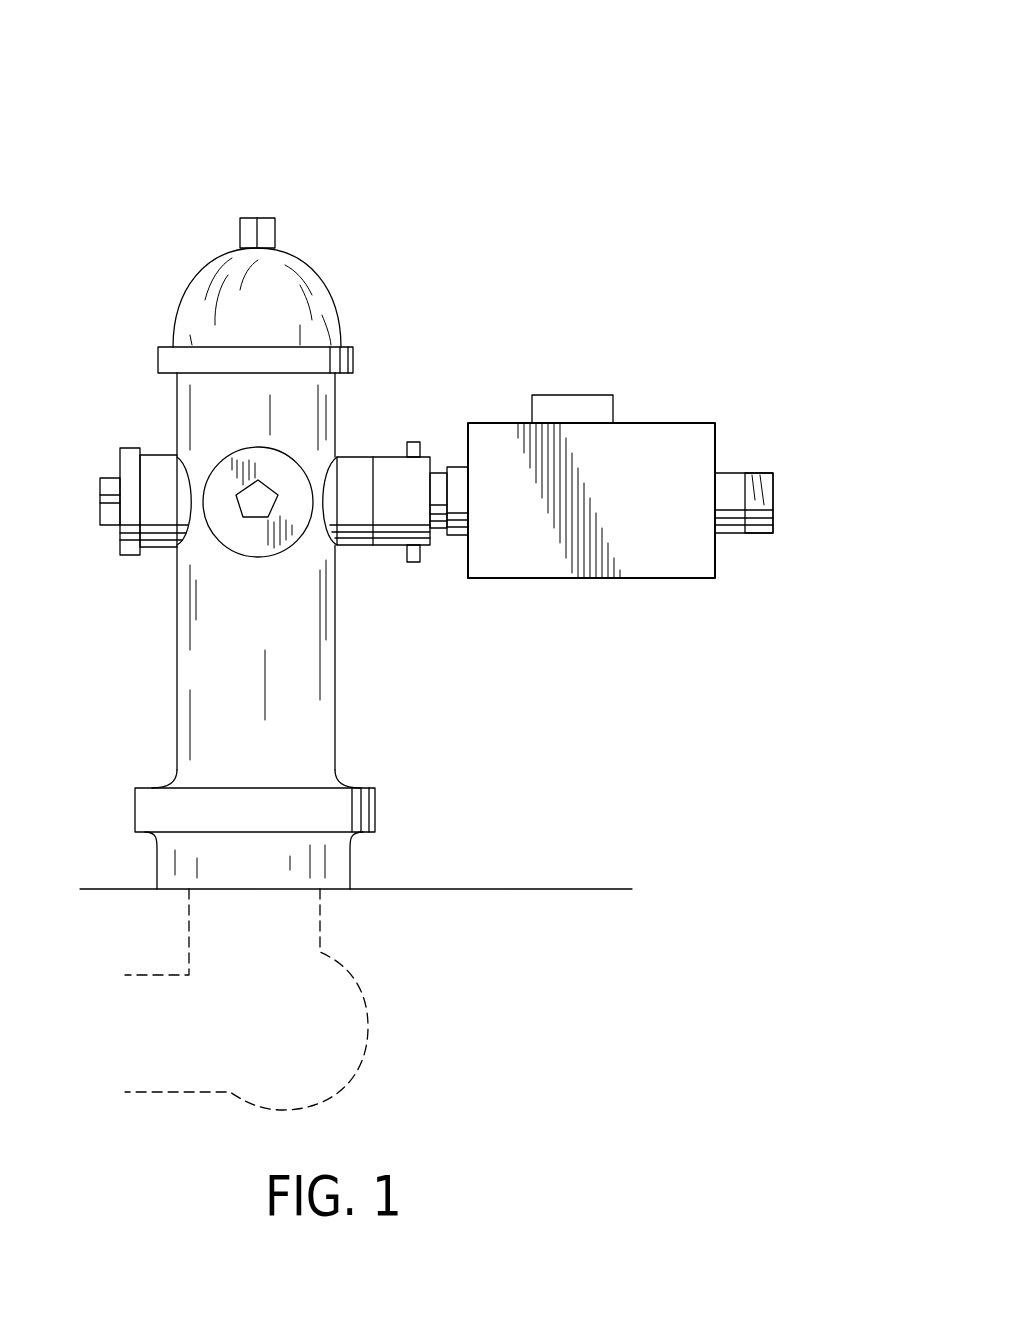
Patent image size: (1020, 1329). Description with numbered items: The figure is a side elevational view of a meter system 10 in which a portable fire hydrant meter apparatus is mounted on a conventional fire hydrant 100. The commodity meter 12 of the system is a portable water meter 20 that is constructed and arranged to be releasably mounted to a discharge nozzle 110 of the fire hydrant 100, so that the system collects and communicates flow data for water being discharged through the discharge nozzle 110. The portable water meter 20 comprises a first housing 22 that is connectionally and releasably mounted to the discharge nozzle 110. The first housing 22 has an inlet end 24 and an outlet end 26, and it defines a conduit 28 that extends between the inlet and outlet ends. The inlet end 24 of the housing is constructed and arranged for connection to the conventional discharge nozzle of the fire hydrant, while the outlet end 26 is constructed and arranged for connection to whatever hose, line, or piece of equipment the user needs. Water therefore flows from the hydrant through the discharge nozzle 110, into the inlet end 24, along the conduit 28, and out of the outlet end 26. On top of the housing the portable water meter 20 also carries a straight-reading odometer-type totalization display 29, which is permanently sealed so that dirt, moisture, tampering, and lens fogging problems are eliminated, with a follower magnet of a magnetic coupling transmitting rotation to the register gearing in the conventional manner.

The meter system 10 is at (580, 150).
The commodity meter 12 is at (752, 422).
The portable water meter 20 is at (673, 423).
The first housing 22 is at (660, 580).
The inlet end 24 is at (441, 535).
The outlet end 26 is at (765, 535).
The conduit 28 is at (775, 500).
The totalization display 29 is at (567, 395).
The fire hydrant 100 is at (201, 262).
The discharge nozzle 110 is at (387, 454).